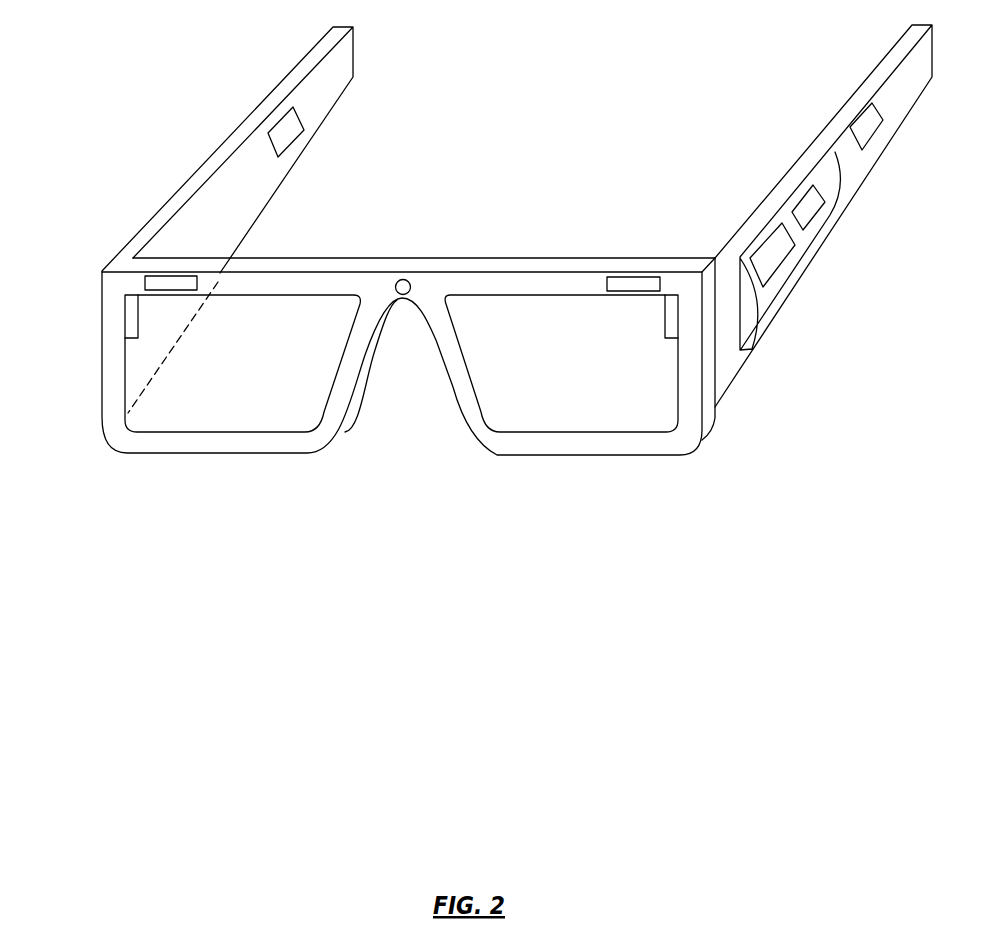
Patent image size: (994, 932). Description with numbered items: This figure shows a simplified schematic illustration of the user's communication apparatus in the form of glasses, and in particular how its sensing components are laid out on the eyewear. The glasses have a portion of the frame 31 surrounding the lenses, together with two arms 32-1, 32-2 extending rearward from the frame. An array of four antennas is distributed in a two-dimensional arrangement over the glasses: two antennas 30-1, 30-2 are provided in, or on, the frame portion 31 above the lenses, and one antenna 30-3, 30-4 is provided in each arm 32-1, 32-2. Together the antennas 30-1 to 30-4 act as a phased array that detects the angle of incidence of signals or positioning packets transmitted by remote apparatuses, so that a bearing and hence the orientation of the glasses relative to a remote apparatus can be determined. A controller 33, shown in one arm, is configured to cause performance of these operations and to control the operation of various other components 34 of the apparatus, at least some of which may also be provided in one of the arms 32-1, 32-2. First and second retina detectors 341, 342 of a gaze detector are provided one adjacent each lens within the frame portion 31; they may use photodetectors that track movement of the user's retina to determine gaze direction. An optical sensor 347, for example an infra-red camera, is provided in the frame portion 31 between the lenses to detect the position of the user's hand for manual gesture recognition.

The portion of the frame 31 is at (594, 447).
The arm 32-1 is at (342, 60).
The arm 32-2 is at (906, 56).
The antenna 30-1 is at (145, 282).
The antenna 30-2 is at (637, 280).
The antenna 30-3 is at (288, 135).
The antenna 30-4 is at (866, 135).
The controller 33 is at (792, 250).
The other components 34 is at (814, 211).
The retina detector 341 is at (130, 322).
The retina detector 342 is at (665, 318).
The optical sensor 347 is at (403, 279).